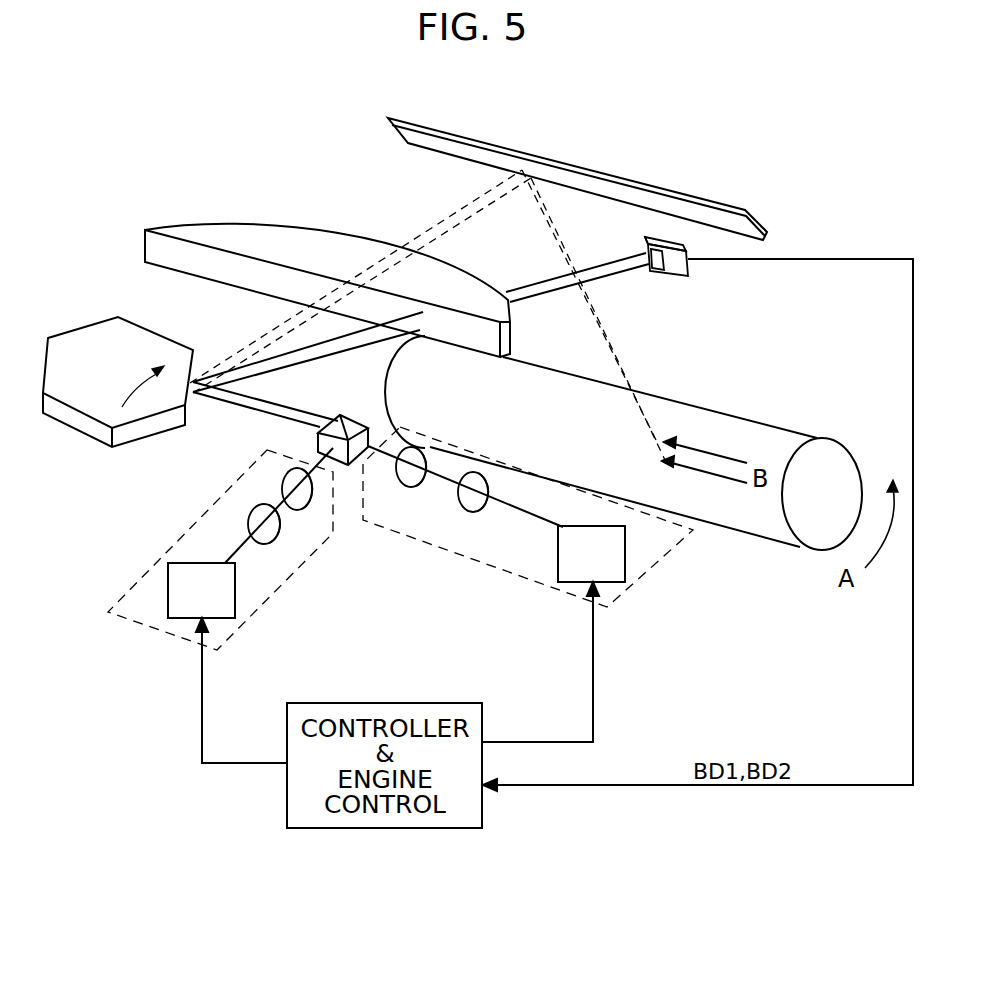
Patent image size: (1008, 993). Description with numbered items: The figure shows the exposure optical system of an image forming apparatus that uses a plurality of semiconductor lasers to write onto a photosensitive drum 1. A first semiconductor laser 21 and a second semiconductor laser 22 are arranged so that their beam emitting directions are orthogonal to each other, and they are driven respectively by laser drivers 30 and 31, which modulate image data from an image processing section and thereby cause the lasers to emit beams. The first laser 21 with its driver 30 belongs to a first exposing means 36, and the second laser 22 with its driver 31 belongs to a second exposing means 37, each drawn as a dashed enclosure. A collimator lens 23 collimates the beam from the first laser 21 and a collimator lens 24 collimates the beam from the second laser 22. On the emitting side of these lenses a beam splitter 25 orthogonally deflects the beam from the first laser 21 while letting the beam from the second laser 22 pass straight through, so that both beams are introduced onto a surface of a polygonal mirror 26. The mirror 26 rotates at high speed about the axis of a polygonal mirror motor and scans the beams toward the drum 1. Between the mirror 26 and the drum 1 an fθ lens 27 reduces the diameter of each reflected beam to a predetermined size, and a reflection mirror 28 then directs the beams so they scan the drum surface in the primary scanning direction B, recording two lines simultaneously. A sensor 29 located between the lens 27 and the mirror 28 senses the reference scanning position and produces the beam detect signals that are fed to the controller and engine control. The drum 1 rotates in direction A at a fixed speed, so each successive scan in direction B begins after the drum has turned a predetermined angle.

The photosensitive drum 1 is at (740, 427).
The first semiconductor laser 21 is at (262, 523).
The second semiconductor laser 22 is at (478, 498).
The collimator lens 23 is at (294, 492).
The collimator lens 24 is at (413, 476).
The beam splitter 25 is at (352, 428).
The polygonal mirror 26 is at (82, 340).
The fθ lens 27 is at (288, 242).
The reflection mirror 28 is at (635, 197).
The sensor 29 is at (673, 268).
The laser driver 30 is at (182, 587).
The laser driver 31 is at (566, 574).
The first exposing means 36 is at (277, 592).
The second exposing means 37 is at (657, 567).